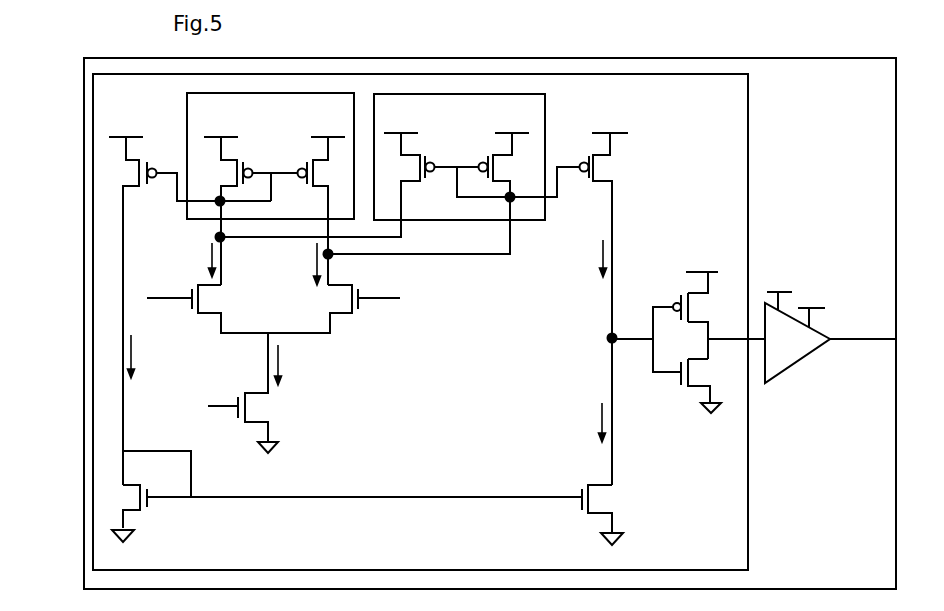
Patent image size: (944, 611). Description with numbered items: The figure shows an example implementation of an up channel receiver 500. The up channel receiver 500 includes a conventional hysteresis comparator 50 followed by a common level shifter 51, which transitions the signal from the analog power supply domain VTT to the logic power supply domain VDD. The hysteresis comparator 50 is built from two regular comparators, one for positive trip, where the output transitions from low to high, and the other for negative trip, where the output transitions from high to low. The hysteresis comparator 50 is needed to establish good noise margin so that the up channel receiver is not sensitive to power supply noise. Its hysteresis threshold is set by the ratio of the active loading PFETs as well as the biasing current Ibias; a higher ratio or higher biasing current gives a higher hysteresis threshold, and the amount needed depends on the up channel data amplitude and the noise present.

The up channel receiver 500 is at (84, 200).
The hysteresis comparator 50 is at (760, 517).
The level shifter 51 is at (802, 377).